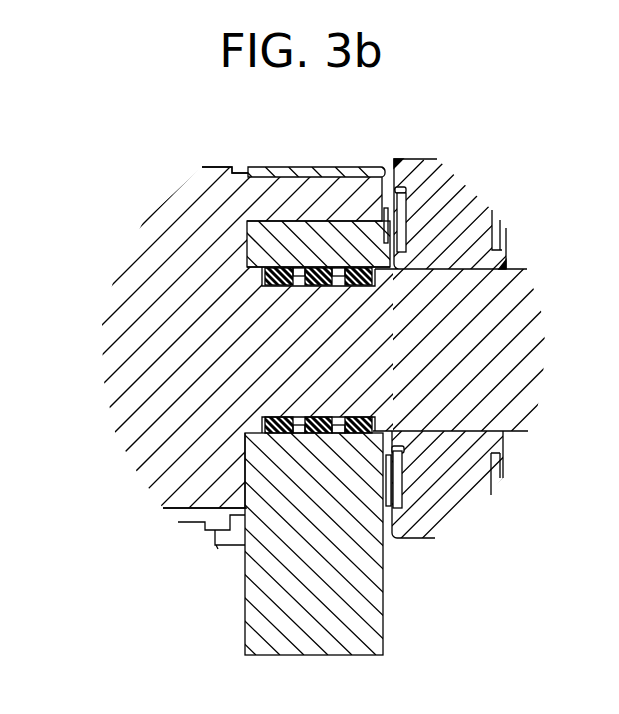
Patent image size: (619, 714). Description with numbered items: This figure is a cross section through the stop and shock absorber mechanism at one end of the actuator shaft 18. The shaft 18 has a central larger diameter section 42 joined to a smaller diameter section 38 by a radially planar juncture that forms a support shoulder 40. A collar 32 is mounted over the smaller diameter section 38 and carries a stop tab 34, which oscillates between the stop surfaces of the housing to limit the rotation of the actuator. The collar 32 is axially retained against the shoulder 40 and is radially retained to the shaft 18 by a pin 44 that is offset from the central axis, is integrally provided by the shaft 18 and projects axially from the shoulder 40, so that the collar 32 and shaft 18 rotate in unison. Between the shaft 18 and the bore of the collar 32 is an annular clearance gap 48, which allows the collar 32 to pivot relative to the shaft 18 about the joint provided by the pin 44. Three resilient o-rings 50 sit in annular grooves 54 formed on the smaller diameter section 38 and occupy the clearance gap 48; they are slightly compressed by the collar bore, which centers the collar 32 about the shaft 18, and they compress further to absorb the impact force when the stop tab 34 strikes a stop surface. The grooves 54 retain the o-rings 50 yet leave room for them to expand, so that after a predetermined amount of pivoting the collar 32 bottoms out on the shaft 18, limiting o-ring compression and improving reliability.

The shaft 18 is at (140, 450).
The collar 32 is at (347, 247).
The stop tab 34 is at (378, 617).
The smaller diameter section 38 is at (498, 313).
The support shoulder 40 is at (245, 478).
The central larger diameter section 42 is at (190, 180).
The pin 44 is at (285, 192).
The annular clearance gap 48 is at (400, 427).
The resilient o-rings 50 is at (353, 286).
The annular grooves 54 is at (353, 416).